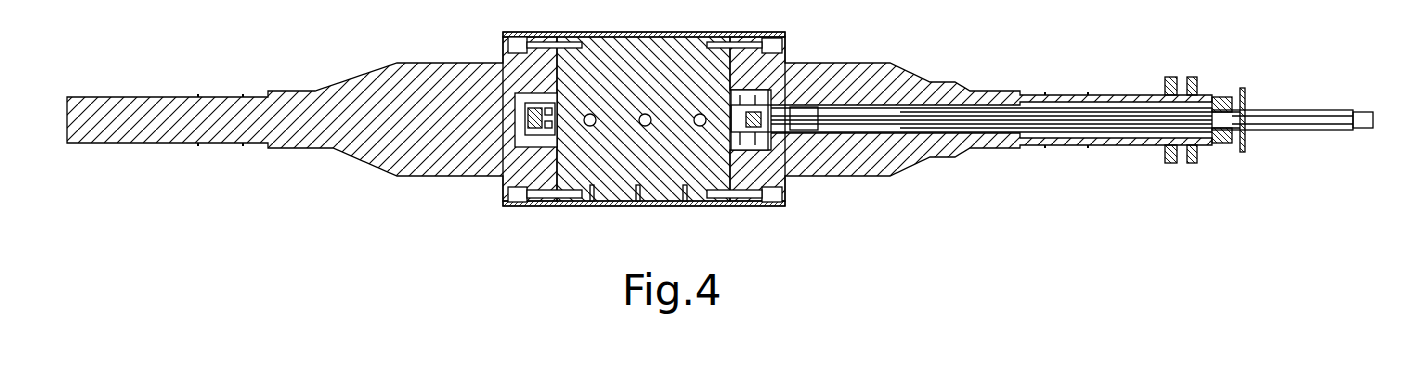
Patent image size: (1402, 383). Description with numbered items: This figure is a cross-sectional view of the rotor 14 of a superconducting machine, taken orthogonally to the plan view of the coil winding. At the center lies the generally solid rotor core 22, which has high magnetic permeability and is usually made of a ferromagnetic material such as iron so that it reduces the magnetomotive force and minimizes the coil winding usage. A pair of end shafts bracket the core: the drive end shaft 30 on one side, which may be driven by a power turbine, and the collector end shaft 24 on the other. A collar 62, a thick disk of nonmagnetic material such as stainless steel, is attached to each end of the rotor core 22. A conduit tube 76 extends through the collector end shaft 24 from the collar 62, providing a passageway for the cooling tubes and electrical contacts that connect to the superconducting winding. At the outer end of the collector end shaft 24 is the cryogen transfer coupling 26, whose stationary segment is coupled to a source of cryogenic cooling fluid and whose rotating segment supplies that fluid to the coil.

The rotor 14 is at (557, 32).
The rotor core 22 is at (682, 170).
The collector end shaft 24 is at (866, 158).
The cryogen transfer coupling 26 is at (1265, 108).
The drive end shaft 30 is at (355, 137).
The collar 62 is at (487, 64).
The conduit tube 76 is at (865, 104).